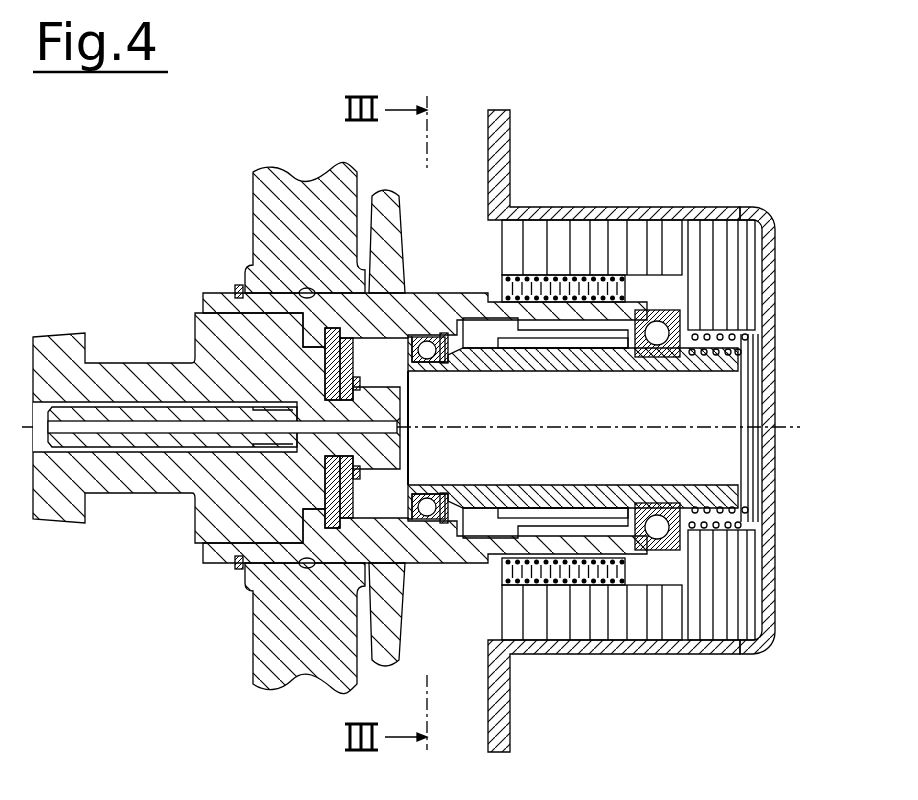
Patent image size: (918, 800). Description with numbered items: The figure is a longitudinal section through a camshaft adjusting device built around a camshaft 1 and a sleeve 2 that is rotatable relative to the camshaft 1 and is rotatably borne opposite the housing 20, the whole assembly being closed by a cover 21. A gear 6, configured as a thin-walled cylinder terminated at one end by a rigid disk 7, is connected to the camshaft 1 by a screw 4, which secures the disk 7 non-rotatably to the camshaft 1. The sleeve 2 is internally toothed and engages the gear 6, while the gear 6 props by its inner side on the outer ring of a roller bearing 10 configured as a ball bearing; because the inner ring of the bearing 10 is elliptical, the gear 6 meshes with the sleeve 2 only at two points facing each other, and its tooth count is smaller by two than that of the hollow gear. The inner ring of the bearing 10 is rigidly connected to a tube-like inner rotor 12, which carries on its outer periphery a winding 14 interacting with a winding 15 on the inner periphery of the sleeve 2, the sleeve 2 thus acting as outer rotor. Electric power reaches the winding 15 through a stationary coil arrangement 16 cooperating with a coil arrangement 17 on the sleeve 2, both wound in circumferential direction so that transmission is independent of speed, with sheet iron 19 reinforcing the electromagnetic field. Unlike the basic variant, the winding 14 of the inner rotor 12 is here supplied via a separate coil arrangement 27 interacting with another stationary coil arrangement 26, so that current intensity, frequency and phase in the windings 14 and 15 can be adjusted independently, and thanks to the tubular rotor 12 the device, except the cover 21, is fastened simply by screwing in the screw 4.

The camshaft 1 is at (126, 477).
The sleeve 2 is at (388, 290).
The screw 4 is at (182, 440).
The gear 6 is at (398, 357).
The rigid disk 7 is at (352, 504).
The roller bearing 10 is at (427, 520).
The inner rotor 12 is at (613, 507).
The winding 14 is at (598, 340).
The winding 15 is at (557, 334).
The stationary coil arrangement 16 is at (542, 278).
The coil arrangement 17 is at (612, 290).
The sheet iron 19 is at (600, 622).
The housing 20 is at (302, 652).
The cover 21 is at (770, 583).
The stationary coil arrangement 26 is at (748, 338).
The coil arrangement 27 is at (740, 353).